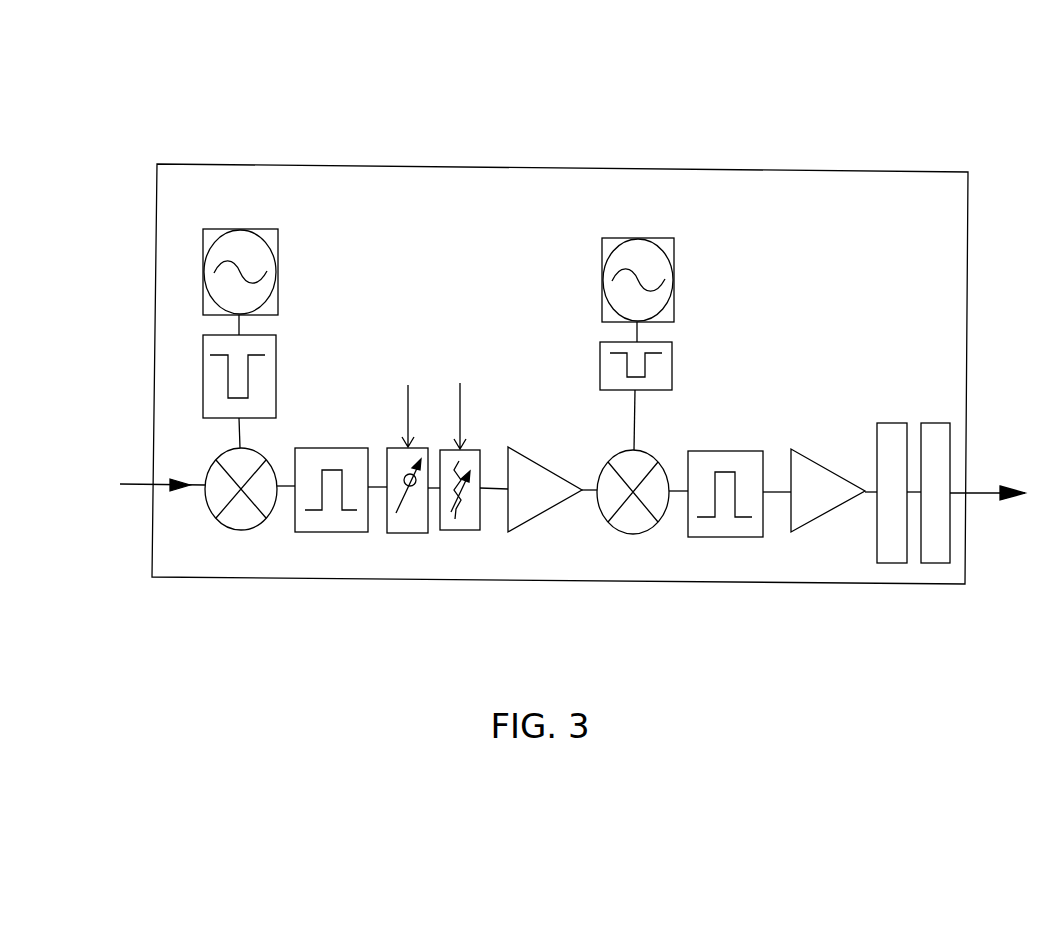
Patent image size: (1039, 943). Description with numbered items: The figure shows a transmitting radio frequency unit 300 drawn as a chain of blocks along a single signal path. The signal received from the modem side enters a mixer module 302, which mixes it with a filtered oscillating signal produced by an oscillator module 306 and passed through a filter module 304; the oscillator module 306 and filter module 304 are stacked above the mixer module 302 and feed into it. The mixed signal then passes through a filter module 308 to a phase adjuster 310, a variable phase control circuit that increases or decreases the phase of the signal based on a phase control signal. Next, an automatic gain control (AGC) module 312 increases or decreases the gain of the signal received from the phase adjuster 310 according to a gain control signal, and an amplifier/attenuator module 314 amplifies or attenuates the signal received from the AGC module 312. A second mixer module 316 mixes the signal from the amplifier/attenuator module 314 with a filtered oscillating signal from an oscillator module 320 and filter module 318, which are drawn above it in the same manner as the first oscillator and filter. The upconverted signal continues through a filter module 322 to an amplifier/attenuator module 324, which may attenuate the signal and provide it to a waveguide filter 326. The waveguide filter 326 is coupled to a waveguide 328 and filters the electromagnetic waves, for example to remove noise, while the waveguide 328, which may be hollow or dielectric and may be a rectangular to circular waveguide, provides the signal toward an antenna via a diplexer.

The transmitting radio frequency unit 300 is at (86, 164).
The mixer module 302 is at (242, 530).
The filter module 304 is at (276, 405).
The oscillator module 306 is at (277, 300).
The filter module 308 is at (332, 532).
The phase adjuster 310 is at (410, 533).
The automatic gain control (AGC) module 312 is at (458, 530).
The amplifier/attenuator module 314 is at (528, 532).
The mixer module 316 is at (632, 534).
The filter module 318 is at (672, 372).
The oscillator module 320 is at (672, 305).
The filter module 322 is at (726, 537).
The amplifier/attenuator module 324 is at (791, 532).
The waveguide filter 326 is at (889, 563).
The waveguide 328 is at (940, 563).